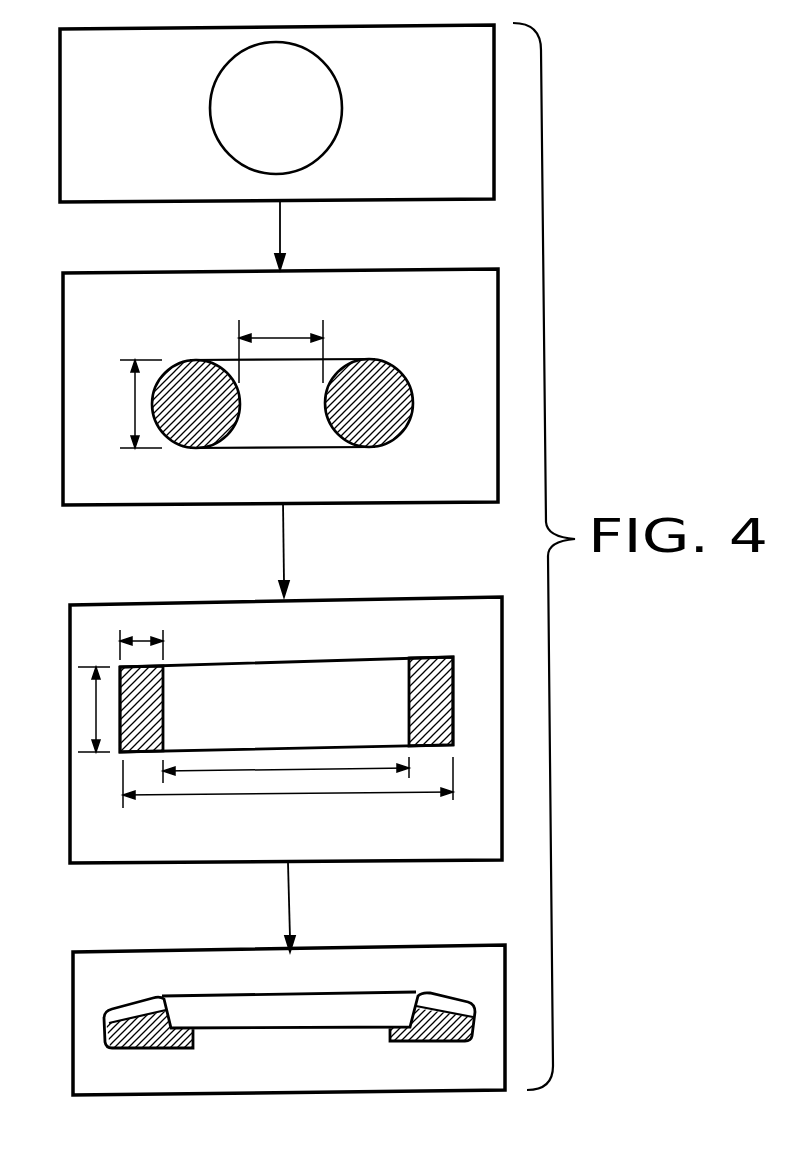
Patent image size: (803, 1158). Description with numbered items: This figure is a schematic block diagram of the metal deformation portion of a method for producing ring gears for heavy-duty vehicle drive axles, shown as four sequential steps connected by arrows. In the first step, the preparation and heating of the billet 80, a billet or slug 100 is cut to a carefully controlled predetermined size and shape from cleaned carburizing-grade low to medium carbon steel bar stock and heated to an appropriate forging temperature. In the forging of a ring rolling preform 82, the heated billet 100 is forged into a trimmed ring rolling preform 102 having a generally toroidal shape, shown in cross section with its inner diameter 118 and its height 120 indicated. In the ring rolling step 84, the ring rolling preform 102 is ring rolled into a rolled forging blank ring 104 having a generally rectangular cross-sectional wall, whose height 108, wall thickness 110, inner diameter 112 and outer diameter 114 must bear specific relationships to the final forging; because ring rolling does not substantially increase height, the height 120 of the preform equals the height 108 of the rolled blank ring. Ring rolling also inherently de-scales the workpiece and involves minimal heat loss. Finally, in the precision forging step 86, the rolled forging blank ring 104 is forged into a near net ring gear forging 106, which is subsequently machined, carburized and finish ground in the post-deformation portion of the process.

The billet preparation and heating step 80 is at (60, 106).
The ring rolling preform forging step 82 is at (63, 338).
The ring rolling step 84 is at (476, 597).
The precision forging step 86 is at (165, 952).
The billet 100 is at (270, 68).
The ring rolling preform 102 is at (397, 412).
The rolled forging blank ring 104 is at (428, 672).
The near net ring gear forging 106 is at (340, 1013).
The height 108 is at (96, 705).
The wall thickness 110 is at (143, 638).
The inner diameter 112 is at (242, 771).
The outer diameter 114 is at (333, 793).
The inner diameter of the preform 118 is at (280, 337).
The height of the preform 120 is at (134, 408).